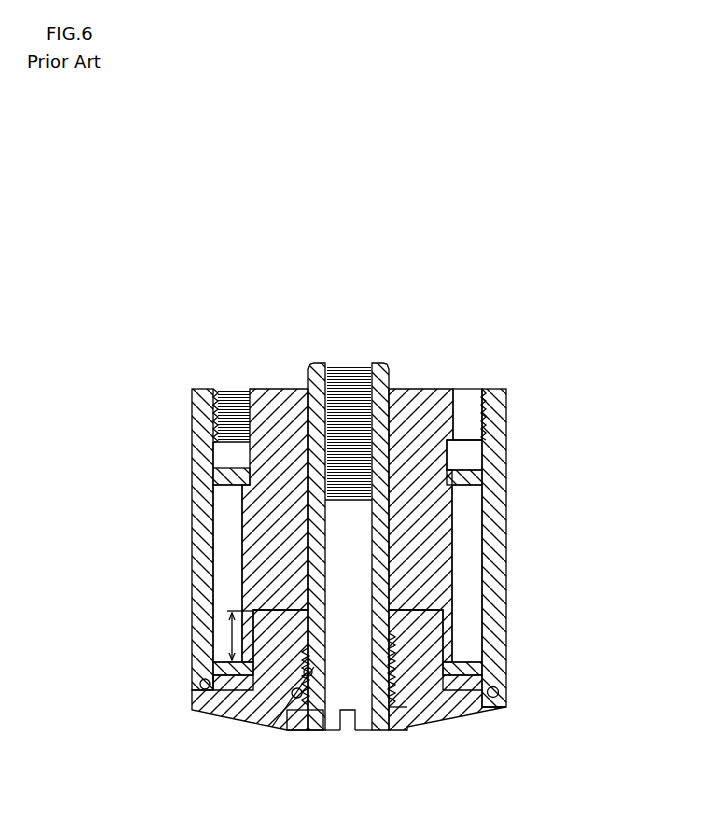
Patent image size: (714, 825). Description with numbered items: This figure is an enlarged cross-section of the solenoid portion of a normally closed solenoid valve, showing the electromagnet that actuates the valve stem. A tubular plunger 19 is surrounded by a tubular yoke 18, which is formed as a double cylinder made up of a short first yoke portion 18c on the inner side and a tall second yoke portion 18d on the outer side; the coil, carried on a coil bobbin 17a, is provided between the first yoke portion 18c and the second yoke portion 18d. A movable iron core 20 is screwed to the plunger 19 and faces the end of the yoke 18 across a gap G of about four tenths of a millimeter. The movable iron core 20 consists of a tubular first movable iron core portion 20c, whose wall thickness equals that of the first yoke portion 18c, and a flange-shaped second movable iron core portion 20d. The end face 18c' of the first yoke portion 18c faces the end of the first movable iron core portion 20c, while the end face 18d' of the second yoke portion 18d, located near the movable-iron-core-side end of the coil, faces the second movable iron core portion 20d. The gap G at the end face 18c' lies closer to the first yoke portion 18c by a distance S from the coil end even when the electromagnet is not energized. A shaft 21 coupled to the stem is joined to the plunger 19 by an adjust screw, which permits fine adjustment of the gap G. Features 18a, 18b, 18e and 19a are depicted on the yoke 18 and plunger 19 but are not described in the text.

The yoke 18 is at (453, 367).
The bolt hole 18a is at (216, 540).
The central tube 18b is at (389, 547).
The first yoke portion 18c is at (354, 507).
The end face of the first yoke portion 18c' is at (347, 618).
The second yoke portion 18d is at (351, 548).
The end face of the second yoke portion 18d' is at (525, 653).
The latch element 18e is at (300, 668).
The coil bobbin 17a is at (445, 609).
The plunger 19 is at (306, 718).
The thread end block 19a is at (312, 733).
The movable iron core 20 is at (442, 736).
The first movable iron core portion 20c is at (484, 640).
The second movable iron core portion 20d is at (499, 698).
The shaft 21 is at (351, 693).
The gap G is at (250, 608).
The distance S is at (233, 635).